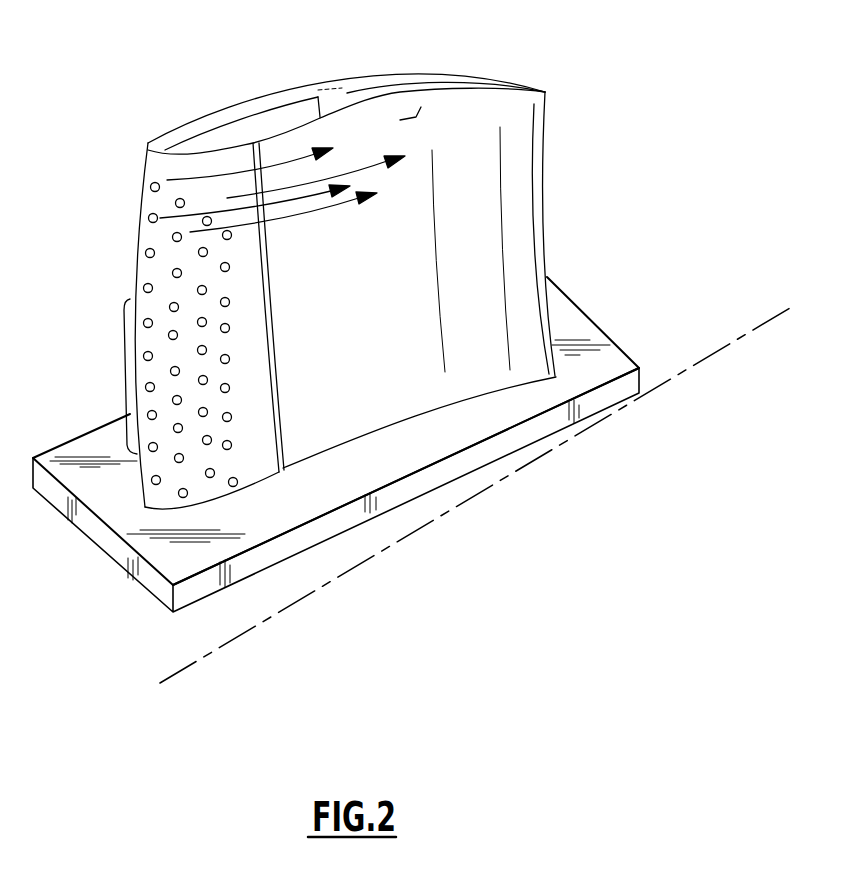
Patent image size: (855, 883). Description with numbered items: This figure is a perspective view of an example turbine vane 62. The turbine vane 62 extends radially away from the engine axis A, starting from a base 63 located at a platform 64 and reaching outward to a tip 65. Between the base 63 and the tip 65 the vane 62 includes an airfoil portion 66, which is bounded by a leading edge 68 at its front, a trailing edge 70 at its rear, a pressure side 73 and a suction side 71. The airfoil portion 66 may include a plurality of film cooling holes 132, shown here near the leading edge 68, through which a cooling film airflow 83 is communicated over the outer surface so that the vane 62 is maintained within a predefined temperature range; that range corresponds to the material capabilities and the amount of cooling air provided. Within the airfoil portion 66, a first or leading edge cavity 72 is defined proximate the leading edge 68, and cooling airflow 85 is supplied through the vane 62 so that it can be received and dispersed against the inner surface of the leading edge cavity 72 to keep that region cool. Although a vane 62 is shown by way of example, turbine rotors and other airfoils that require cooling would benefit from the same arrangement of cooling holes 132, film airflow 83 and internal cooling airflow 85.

The turbine vane 62 is at (616, 100).
The base 63 is at (532, 400).
The platform 64 is at (116, 504).
The tip 65 is at (352, 86).
The airfoil portion 66 is at (564, 233).
The leading edge 68 is at (122, 274).
The trailing edge 70 is at (563, 159).
The suction side 71 is at (306, 72).
The leading edge cavity 72 is at (220, 92).
The pressure side 73 is at (425, 124).
The cooling film airflow 83 is at (316, 232).
The cooling airflow 85 is at (441, 511).
The film cooling holes 132 is at (125, 380).
The engine axis A is at (758, 324).